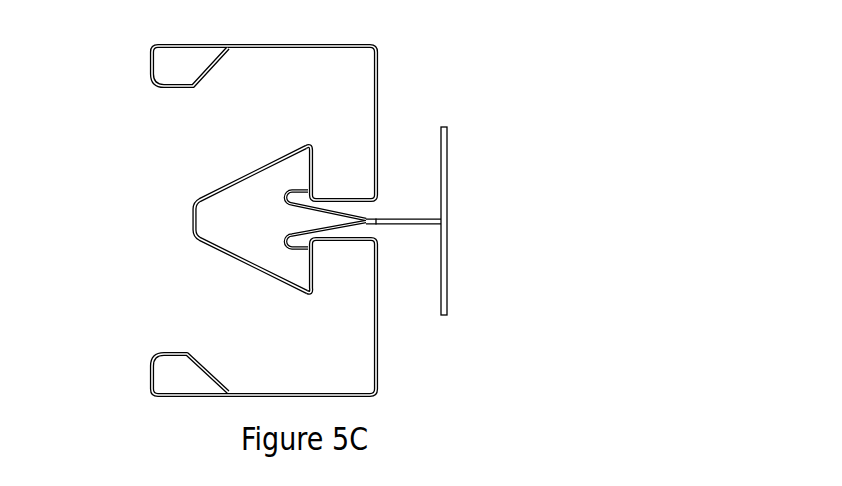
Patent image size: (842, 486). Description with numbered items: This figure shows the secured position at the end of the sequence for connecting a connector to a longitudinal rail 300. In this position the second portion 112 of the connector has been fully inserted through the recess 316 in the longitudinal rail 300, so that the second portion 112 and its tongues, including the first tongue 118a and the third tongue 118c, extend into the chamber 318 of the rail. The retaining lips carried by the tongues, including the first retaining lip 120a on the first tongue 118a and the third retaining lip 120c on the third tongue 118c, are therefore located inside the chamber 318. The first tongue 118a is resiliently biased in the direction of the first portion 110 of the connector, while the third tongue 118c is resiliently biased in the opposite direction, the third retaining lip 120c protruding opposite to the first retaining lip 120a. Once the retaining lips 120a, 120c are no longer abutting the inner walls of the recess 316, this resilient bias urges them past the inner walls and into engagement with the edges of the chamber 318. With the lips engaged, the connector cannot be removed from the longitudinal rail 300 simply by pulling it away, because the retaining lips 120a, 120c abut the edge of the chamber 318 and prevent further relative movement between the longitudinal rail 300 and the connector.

The longitudinal rail 300 is at (295, 220).
The recess 316 is at (373, 208).
The chamber 318 is at (233, 227).
The first tongue 118a is at (340, 208).
The third tongue 118c is at (341, 226).
The first retaining lip 120a is at (285, 190).
The third retaining lip 120c is at (292, 238).
The second portion 112 is at (412, 227).
The first portion 110 is at (448, 158).